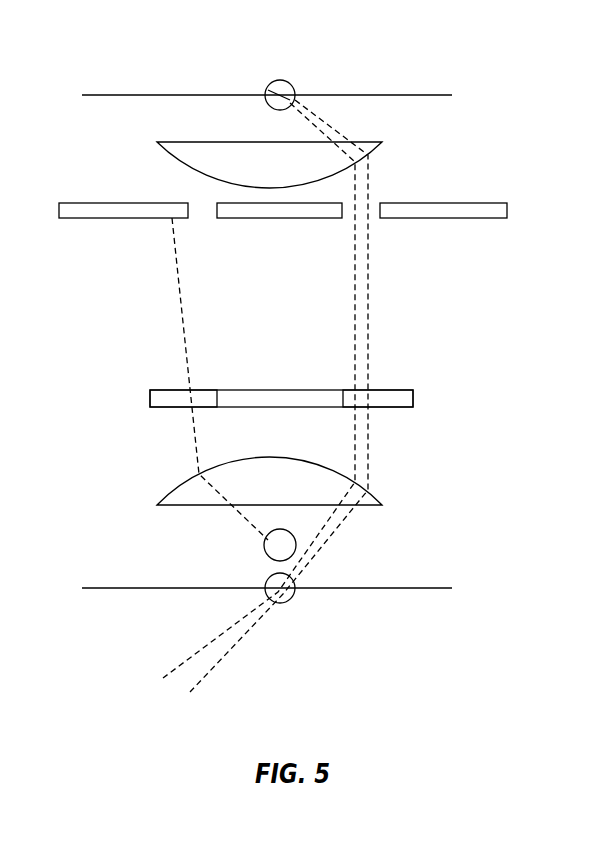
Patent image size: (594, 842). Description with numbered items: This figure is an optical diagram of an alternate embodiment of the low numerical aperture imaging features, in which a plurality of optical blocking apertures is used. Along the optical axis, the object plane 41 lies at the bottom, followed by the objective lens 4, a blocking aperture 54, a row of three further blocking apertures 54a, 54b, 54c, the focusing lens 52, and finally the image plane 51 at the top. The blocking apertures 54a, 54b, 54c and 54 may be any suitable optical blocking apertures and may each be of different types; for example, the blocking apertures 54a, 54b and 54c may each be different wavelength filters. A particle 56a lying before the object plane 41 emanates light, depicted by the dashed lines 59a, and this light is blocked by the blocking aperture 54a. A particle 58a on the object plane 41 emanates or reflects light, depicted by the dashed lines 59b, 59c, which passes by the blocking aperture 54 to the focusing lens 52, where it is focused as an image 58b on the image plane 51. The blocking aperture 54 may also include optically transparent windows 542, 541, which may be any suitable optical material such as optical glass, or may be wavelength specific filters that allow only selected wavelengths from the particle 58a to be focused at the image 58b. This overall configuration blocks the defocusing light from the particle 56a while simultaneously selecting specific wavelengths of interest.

The image plane 51 is at (415, 95).
The image 58b is at (283, 80).
The focusing lens 52 is at (193, 142).
The blocking aperture 54a is at (122, 218).
The blocking aperture 54b is at (265, 218).
The blocking aperture 54c is at (468, 218).
The dashed lines 59a is at (185, 330).
The dashed lines 59b is at (352, 300).
The dashed lines 59c is at (370, 320).
The blocking aperture 54 is at (268, 390).
The optically transparent window 542 is at (150, 395).
The optically transparent window 541 is at (413, 398).
The objective lens 4 is at (180, 487).
The particle 56a is at (265, 552).
The particle 58a is at (284, 603).
The object plane 41 is at (435, 588).